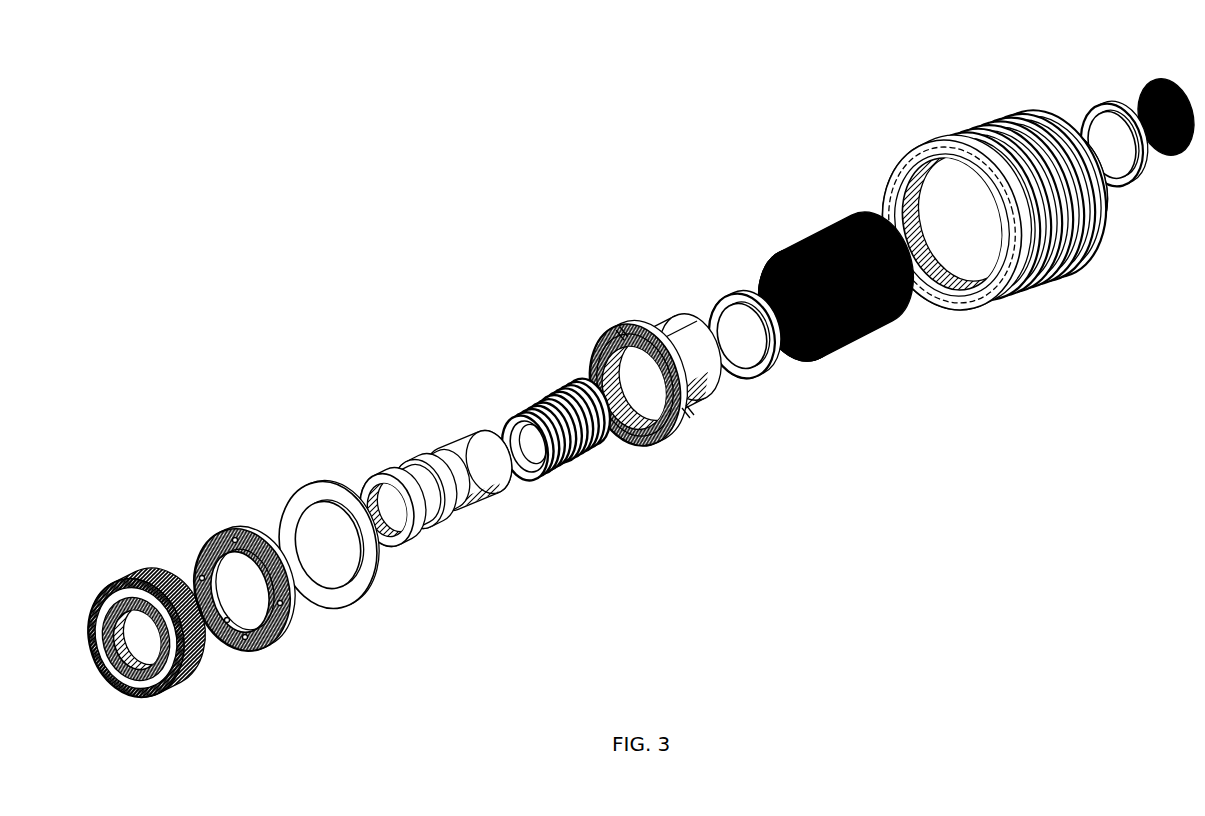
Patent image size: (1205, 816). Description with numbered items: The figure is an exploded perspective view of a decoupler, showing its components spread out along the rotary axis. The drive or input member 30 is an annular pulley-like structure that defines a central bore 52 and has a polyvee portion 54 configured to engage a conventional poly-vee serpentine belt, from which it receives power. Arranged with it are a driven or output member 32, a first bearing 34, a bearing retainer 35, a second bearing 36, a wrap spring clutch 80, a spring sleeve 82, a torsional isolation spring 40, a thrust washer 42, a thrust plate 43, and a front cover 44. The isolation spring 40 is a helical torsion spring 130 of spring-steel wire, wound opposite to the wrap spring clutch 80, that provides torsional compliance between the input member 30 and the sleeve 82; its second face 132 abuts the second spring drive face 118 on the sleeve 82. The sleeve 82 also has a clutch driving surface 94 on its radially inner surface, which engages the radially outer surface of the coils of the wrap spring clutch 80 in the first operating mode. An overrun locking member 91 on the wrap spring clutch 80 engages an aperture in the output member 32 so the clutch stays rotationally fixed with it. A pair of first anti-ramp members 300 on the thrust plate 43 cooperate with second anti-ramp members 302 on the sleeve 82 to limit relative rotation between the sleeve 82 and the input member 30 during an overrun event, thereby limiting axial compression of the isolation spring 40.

The input member 30 is at (994, 219).
The output member 32 is at (428, 458).
The first bearing 34 is at (1088, 112).
The bearing retainer 35 is at (722, 302).
The second bearing 36 is at (128, 577).
The torsional isolation spring 40 is at (788, 244).
The thrust washer 42 is at (287, 493).
The thrust plate 43 is at (263, 622).
The front cover 44 is at (1147, 80).
The central bore 52 is at (968, 254).
The polyvee portion 54 is at (1000, 137).
The wrap spring clutch 80 is at (437, 337).
The spring sleeve 82 is at (620, 380).
The overrun locking member 91 is at (560, 467).
The clutch driving surface 94 is at (612, 358).
The second spring drive face 118 is at (712, 390).
The torsion spring 130 is at (788, 244).
The second face 132 is at (797, 237).
The first anti-ramp members 300 is at (290, 632).
The second anti-ramp members 302 is at (587, 363).